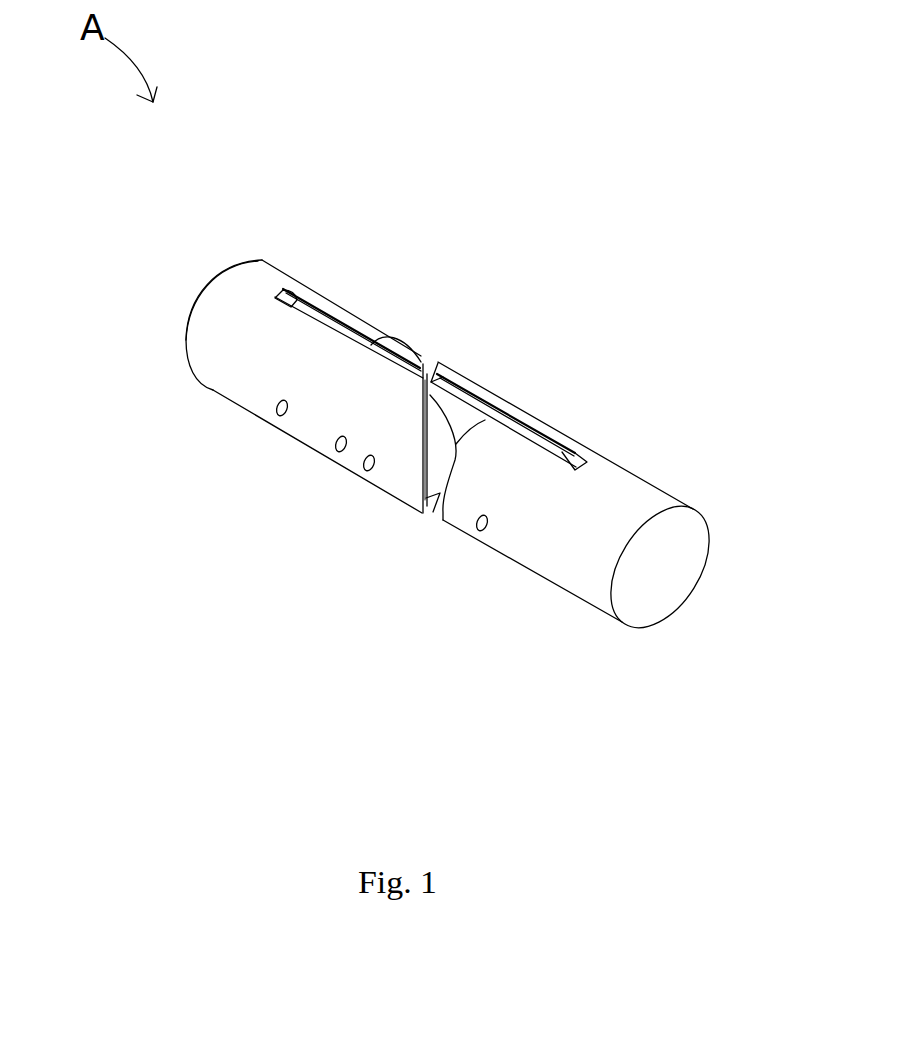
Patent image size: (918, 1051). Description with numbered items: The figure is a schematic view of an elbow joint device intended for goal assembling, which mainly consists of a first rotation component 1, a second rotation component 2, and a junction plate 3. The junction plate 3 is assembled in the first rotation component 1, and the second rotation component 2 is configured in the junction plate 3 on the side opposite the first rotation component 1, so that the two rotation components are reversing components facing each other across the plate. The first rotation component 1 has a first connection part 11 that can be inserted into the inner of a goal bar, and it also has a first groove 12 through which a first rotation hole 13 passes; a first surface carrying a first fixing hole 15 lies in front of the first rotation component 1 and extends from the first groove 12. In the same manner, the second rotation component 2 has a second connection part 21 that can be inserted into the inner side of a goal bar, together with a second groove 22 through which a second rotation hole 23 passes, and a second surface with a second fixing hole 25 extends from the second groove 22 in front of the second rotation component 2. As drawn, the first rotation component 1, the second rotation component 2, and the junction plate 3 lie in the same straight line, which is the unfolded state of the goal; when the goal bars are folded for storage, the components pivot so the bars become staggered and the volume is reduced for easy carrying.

The first rotation component 1 is at (288, 433).
The second rotation component 2 is at (532, 563).
The junction plate 3 is at (420, 362).
The first connection part 11 is at (242, 288).
The first groove 12 is at (290, 298).
The first rotation hole 13 is at (278, 413).
The first fixing hole 15 is at (340, 452).
The second fixing hole 25 is at (368, 470).
The second connection part 21 is at (647, 497).
The second groove 22 is at (580, 458).
The second rotation hole 23 is at (476, 529).